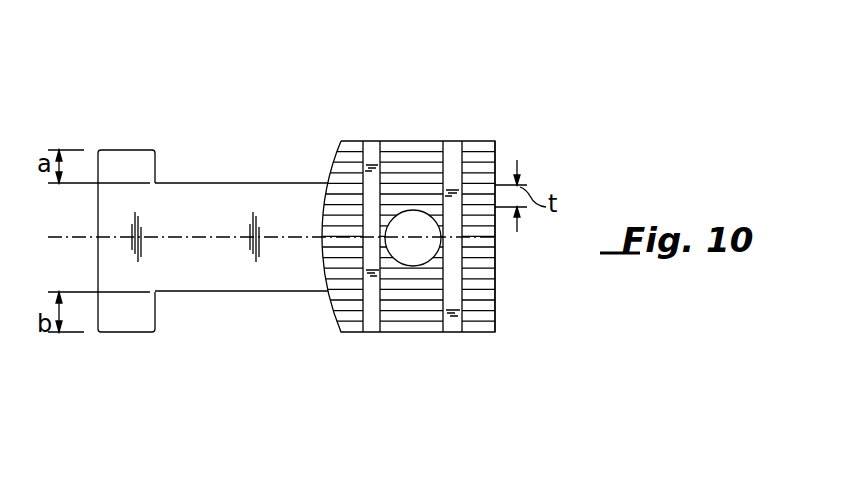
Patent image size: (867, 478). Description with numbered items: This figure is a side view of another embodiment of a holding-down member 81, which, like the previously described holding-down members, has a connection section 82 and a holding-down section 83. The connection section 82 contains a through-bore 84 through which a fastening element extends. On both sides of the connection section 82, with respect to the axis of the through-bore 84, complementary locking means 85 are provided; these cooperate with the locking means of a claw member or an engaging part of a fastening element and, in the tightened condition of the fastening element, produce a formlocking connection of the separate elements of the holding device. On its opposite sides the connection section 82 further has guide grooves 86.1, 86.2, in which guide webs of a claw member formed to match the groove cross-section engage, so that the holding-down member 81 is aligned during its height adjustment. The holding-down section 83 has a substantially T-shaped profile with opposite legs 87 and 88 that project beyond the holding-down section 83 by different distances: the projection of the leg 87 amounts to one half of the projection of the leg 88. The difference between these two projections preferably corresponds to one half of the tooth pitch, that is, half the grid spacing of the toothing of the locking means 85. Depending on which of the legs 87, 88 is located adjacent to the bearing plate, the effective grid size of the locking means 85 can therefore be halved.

The holding-down member 81 is at (520, 75).
The connection section 82 is at (498, 152).
The holding-down section 83 is at (288, 180).
The through-bore 84 is at (413, 227).
The locking means 85 is at (473, 243).
The guide groove 86.1 is at (452, 295).
The guide groove 86.2 is at (360, 188).
The leg 87 is at (128, 173).
The leg 88 is at (130, 322).